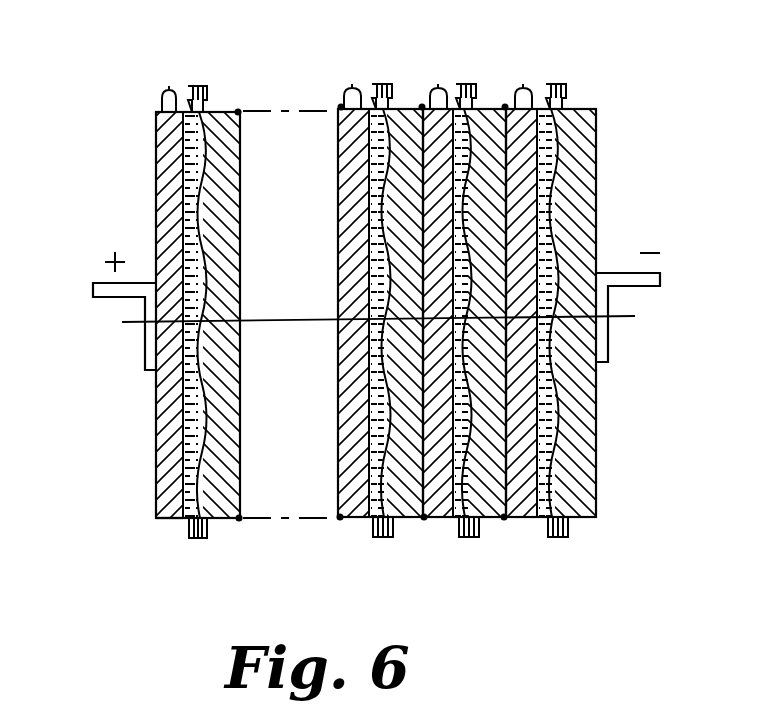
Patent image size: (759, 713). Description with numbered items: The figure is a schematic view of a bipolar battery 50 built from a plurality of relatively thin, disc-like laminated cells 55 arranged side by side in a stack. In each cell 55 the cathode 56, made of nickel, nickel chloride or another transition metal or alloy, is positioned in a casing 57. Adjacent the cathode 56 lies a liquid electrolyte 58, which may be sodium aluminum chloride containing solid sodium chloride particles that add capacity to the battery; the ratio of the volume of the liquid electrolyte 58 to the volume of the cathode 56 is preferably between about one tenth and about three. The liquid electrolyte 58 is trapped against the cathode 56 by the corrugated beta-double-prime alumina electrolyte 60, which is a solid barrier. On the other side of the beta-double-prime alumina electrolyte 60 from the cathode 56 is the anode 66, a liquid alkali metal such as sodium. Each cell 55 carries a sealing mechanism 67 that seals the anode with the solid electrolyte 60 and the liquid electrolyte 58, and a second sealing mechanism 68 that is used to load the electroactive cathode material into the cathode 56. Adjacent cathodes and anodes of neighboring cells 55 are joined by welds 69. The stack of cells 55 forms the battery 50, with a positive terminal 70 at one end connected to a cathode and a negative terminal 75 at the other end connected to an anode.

The bipolar battery 50 is at (72, 455).
The cell 55 is at (224, 524).
The cathode 56 is at (170, 519).
The casing 57 is at (157, 190).
The liquid electrolyte 58 is at (183, 112).
The corrugated beta-double-prime alumina electrolyte 60 is at (219, 112).
The anode 66 is at (217, 222).
The sealing mechanism 67 is at (197, 87).
The sealing mechanism 68 is at (167, 90).
The welds 69 is at (425, 518).
The positive terminal 70 is at (115, 297).
The negative terminal 75 is at (640, 288).